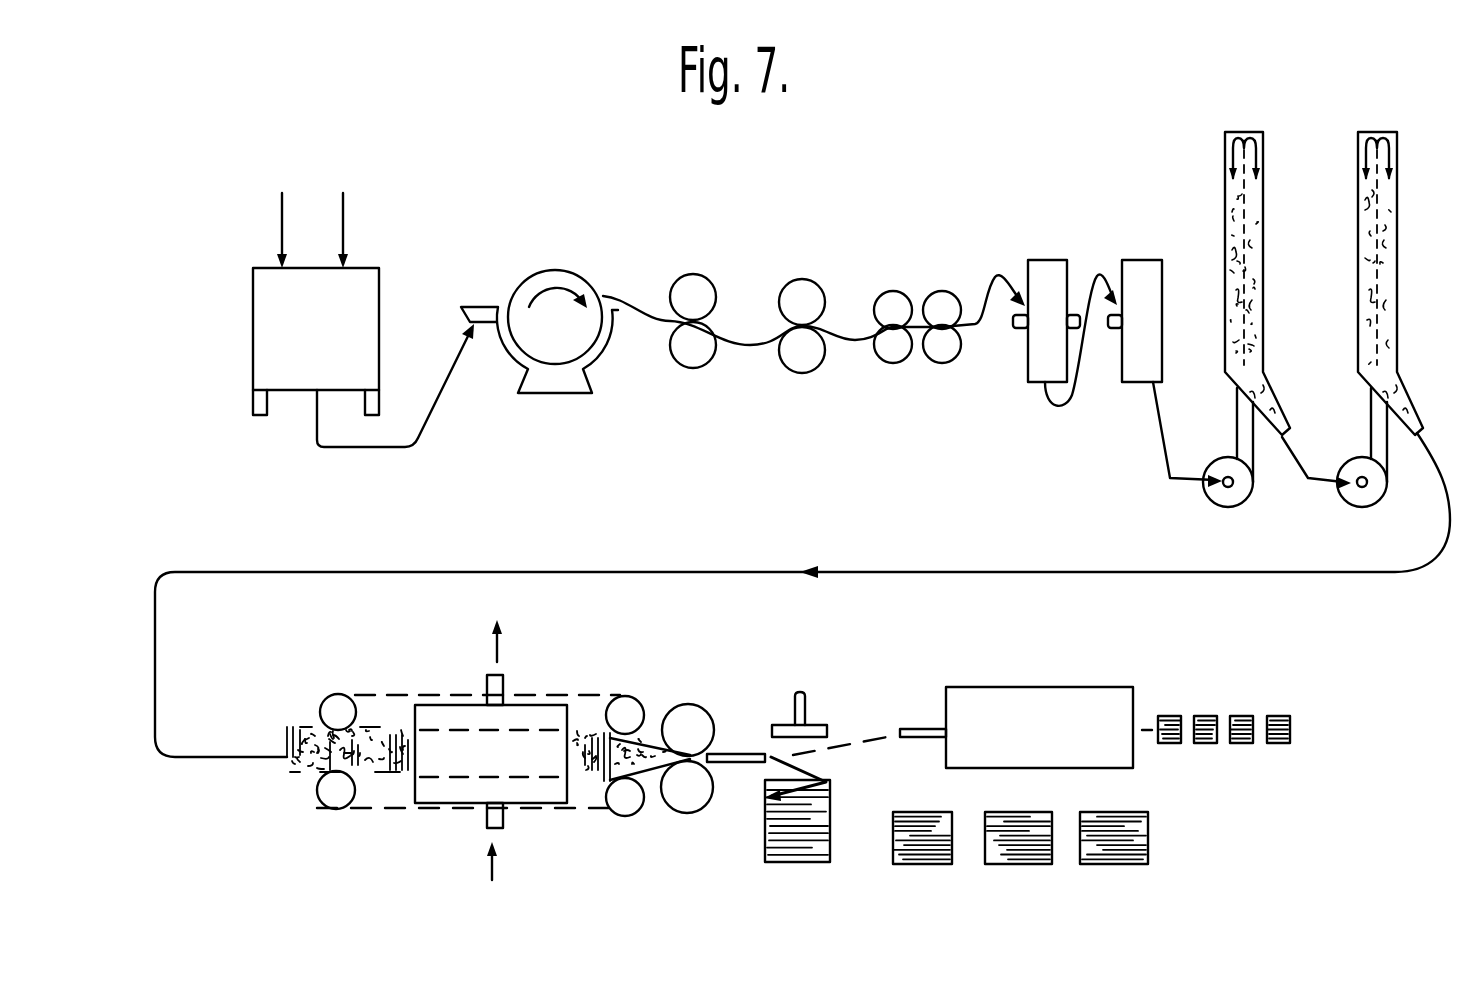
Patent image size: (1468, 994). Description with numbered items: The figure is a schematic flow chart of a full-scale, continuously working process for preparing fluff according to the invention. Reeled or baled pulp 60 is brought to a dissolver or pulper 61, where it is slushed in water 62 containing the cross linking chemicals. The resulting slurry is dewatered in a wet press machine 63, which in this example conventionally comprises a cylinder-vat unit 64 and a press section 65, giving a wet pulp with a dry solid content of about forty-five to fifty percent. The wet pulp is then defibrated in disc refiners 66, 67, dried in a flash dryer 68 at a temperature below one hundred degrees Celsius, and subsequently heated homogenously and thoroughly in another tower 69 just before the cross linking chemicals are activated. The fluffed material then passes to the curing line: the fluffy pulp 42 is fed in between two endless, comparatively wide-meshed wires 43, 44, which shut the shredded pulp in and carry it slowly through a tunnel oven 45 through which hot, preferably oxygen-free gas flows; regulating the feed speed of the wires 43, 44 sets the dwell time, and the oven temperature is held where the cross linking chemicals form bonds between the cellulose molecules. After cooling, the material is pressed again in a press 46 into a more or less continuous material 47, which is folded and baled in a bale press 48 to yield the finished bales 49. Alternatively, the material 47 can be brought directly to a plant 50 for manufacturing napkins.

The fluffy pulp 42 is at (310, 736).
The endless wire 43 is at (450, 664).
The endless wire 44 is at (385, 812).
The tunnel oven 45 is at (540, 706).
The press 46 is at (692, 712).
The continuous material 47 is at (732, 752).
The bale press 48 is at (773, 862).
The finished bales 49 is at (1148, 882).
The plant for manufacturing napkins 50 is at (1060, 692).
The pulp 60 is at (282, 200).
The pulper 61 is at (263, 318).
The water 62 is at (343, 200).
The wet press machine 63 is at (475, 418).
The cylinder-vat unit 64 is at (531, 281).
The press section 65 is at (667, 232).
The disc refiner 66 is at (1050, 268).
The disc refiner 67 is at (1140, 268).
The flash dryer 68 is at (1263, 135).
The tower 69 is at (1397, 135).